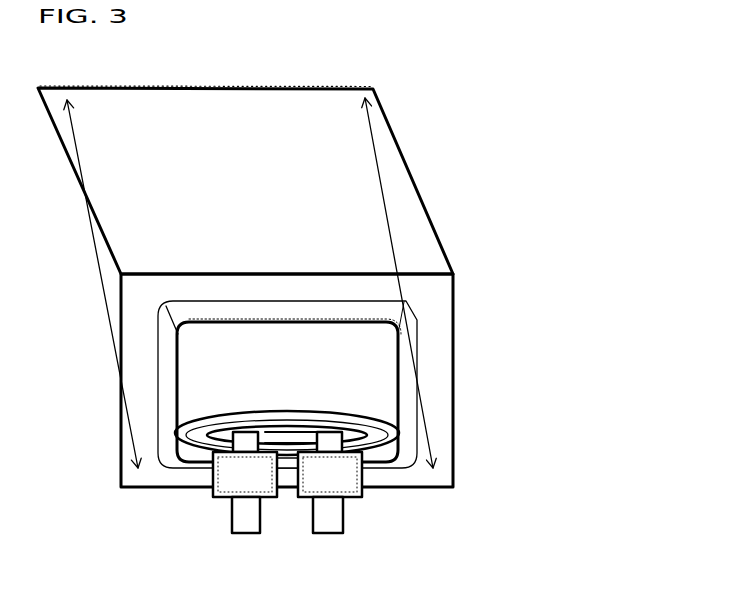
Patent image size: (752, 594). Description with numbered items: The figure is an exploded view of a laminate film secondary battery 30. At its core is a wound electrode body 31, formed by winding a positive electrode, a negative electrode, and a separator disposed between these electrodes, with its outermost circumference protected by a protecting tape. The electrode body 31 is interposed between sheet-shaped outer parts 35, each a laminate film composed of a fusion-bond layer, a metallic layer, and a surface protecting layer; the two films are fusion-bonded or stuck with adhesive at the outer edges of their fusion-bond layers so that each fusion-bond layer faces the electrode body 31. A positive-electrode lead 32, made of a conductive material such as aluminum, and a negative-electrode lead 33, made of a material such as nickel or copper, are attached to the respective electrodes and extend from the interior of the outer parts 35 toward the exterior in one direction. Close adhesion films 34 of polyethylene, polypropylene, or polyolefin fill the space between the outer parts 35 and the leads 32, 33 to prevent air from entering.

The laminate film secondary battery 30 is at (294, 316).
The wound electrode body 31 is at (362, 370).
The positive-electrode lead 32 is at (240, 522).
The negative-electrode lead 33 is at (327, 520).
The close adhesion film 34 is at (350, 479).
The outer part 35 is at (303, 187).